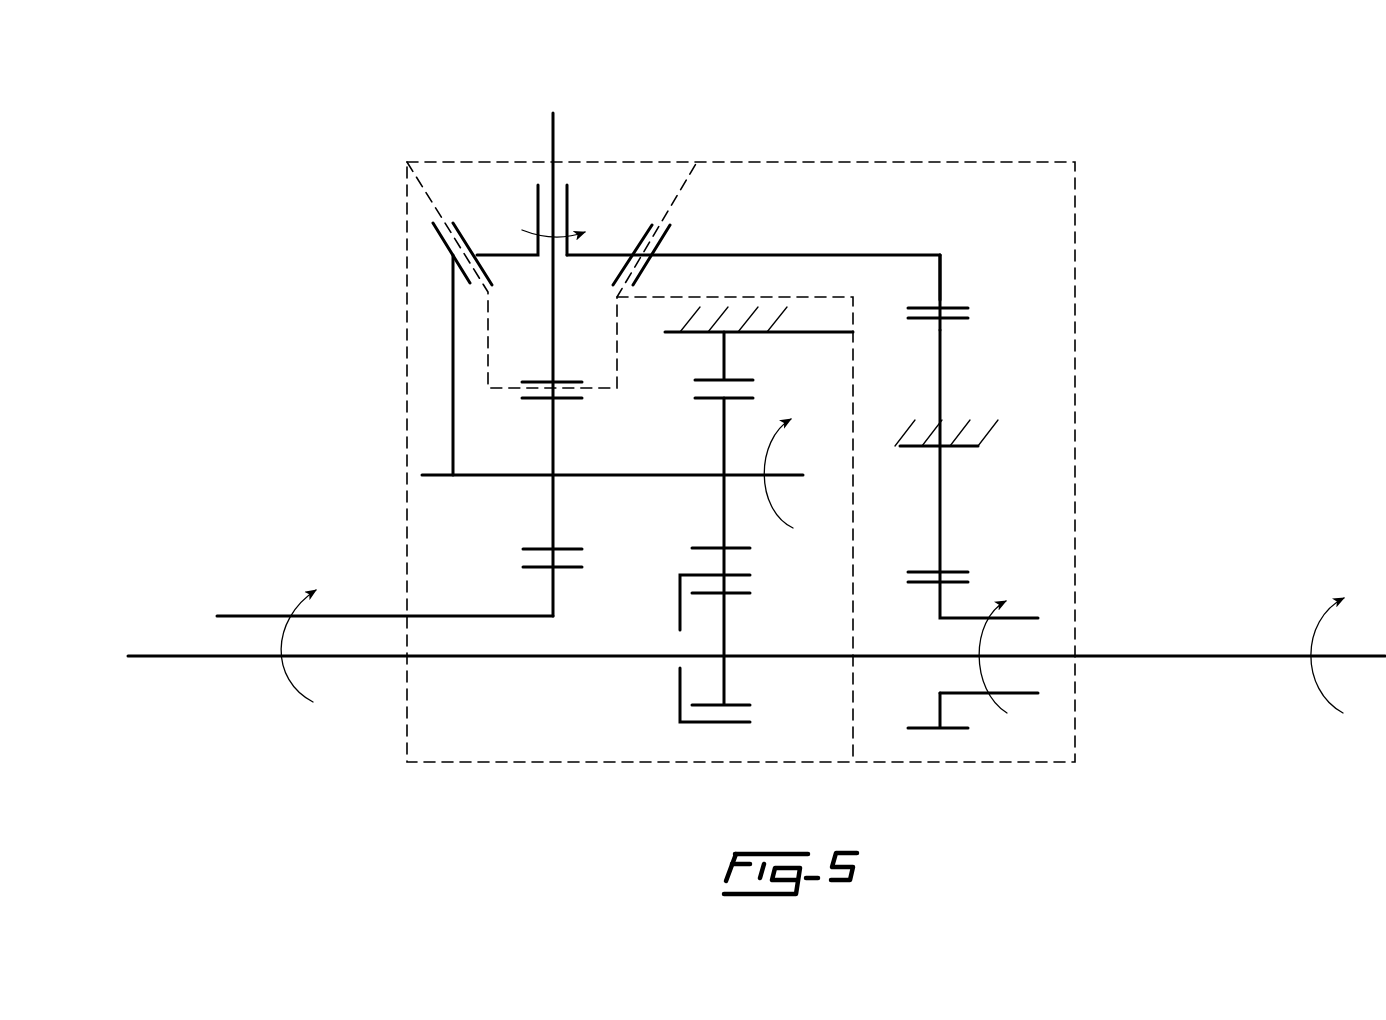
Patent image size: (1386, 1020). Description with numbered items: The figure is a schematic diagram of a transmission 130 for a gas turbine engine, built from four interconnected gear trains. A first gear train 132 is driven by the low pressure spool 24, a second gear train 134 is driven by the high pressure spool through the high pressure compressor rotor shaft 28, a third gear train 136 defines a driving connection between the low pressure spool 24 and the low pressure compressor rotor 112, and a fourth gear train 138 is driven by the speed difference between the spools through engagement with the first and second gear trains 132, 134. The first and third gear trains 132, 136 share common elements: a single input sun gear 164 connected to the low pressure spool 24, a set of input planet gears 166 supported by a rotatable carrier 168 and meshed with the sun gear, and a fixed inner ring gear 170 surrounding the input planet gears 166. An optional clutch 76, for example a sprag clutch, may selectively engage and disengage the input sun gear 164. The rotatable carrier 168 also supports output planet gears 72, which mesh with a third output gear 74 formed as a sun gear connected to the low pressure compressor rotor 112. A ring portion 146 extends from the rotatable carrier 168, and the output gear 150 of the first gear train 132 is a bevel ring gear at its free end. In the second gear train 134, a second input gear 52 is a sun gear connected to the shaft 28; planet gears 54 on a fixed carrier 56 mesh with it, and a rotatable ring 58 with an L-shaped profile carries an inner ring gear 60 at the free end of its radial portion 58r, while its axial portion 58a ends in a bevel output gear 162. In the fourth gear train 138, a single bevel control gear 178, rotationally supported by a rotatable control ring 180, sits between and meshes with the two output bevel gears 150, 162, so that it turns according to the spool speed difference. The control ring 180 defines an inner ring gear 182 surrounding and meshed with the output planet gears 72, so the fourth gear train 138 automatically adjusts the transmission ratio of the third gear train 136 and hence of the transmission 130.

The transmission 130 is at (348, 114).
The first gear train 132 is at (741, 501).
The third gear train 136 is at (472, 763).
The second gear train 134 is at (1055, 162).
The fourth gear train 138 is at (432, 160).
The control gear 178 is at (417, 201).
The output gear 150 is at (440, 237).
The ring portion 146 is at (452, 315).
The control ring 180 is at (552, 347).
The inner ring gear 182 is at (535, 380).
The output planet gears 72 is at (552, 527).
The third output gear 74 is at (542, 570).
The low pressure compressor rotor 112 is at (250, 614).
The low pressure spool 24 is at (1248, 655).
The rotatable carrier 168 is at (627, 480).
The output gear 162 is at (668, 233).
The axial portion 58a is at (738, 255).
The fixed inner ring gear 170 is at (740, 380).
The input planet gears 166 is at (724, 425).
The input sun gear 164 is at (748, 707).
The clutch 76 is at (698, 722).
The rotatable ring 58 is at (927, 250).
The radial portion 58r is at (942, 280).
The inner ring gear 60 is at (970, 307).
The planet gears 54 is at (940, 380).
The fixed carrier 56 is at (963, 448).
The shaft 28 is at (1023, 617).
The second input gear 52 is at (953, 728).